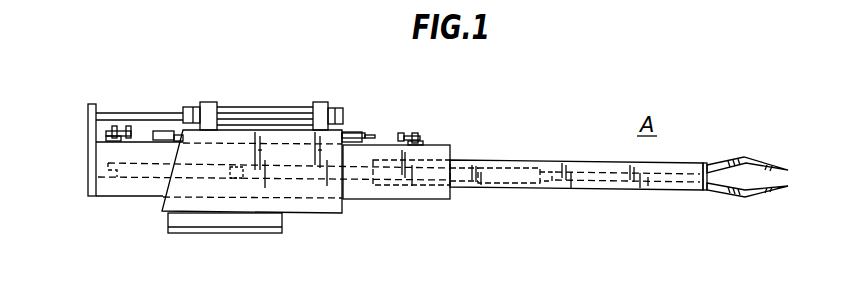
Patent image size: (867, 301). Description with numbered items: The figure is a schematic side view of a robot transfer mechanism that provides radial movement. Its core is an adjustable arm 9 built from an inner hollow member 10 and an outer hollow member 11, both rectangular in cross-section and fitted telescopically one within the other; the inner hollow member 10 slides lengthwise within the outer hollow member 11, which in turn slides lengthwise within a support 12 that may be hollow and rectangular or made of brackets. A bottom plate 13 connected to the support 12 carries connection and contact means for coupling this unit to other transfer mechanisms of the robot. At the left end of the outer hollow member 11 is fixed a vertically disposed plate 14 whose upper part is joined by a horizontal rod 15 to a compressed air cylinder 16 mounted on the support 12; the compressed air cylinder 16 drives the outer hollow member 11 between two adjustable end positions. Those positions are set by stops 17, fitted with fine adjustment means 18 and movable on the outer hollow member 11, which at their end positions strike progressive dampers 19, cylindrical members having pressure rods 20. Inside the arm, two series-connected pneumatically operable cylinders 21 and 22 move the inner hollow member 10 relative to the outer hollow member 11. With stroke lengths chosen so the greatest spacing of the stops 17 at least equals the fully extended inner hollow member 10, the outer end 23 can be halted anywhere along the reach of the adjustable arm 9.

The adjustable arm 9 is at (538, 207).
The inner hollow member 10 is at (587, 160).
The outer hollow member 11 is at (418, 203).
The support 12 is at (323, 217).
The bottom plate 13 is at (233, 237).
The vertically disposed plate 14 is at (87, 184).
The horizontal rod 15 is at (124, 112).
The compressed air cylinder 16 is at (272, 113).
The stops 17 is at (106, 139).
The fine adjustment means 18 is at (131, 128).
The progressive dampers 19 is at (174, 124).
The pressure rods 20 is at (163, 134).
The pneumatically operable cylinder 21 is at (136, 172).
The pneumatically operable cylinder 22 is at (508, 172).
The outer end 23 is at (706, 190).